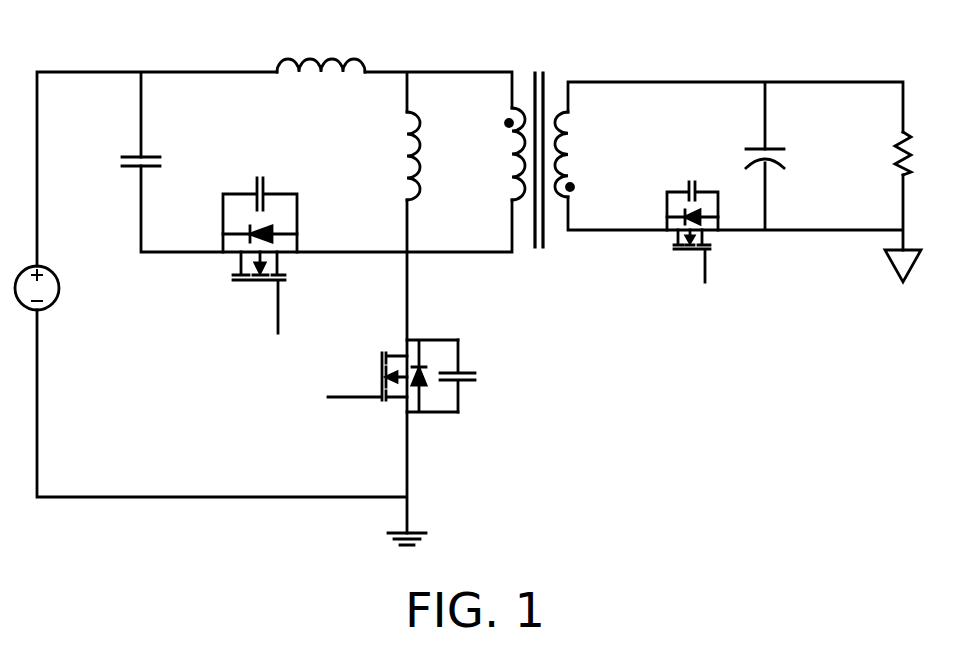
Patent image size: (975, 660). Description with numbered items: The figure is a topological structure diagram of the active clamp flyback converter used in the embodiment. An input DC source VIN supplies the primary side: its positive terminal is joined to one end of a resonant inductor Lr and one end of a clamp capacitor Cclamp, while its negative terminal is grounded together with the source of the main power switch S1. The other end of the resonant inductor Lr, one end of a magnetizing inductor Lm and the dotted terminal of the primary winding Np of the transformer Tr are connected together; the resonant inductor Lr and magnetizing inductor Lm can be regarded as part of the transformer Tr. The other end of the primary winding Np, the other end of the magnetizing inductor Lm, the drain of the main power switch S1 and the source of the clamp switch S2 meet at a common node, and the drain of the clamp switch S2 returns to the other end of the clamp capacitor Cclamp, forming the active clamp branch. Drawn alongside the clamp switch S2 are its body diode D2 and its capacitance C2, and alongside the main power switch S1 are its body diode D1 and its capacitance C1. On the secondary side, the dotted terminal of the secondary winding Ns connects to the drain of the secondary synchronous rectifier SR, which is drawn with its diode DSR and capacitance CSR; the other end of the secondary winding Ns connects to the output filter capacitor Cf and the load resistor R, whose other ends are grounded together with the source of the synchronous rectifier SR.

The input DC source VIN is at (45, 304).
The resonant inductor Lr is at (321, 51).
The magnetizing inductor Lm is at (395, 156).
The clamp capacitor Cclamp is at (193, 148).
The output capacitance of clamp switch C2 is at (260, 209).
The body diode of clamp switch D2 is at (275, 232).
The clamp switch S2 is at (253, 292).
The main power switch S1 is at (361, 376).
The body diode of main switch D1 is at (432, 396).
The output capacitance of main switch C1 is at (465, 376).
The transformer Tr is at (538, 139).
The primary winding Np is at (502, 154).
The secondary winding Ns is at (578, 154).
The output filter capacitor Cf is at (774, 144).
The load resistor R is at (890, 153).
The output capacitance of synchronous rectifier CSR is at (692, 190).
The body diode of synchronous rectifier DSR is at (712, 216).
The secondary synchronous rectifier SR is at (710, 256).